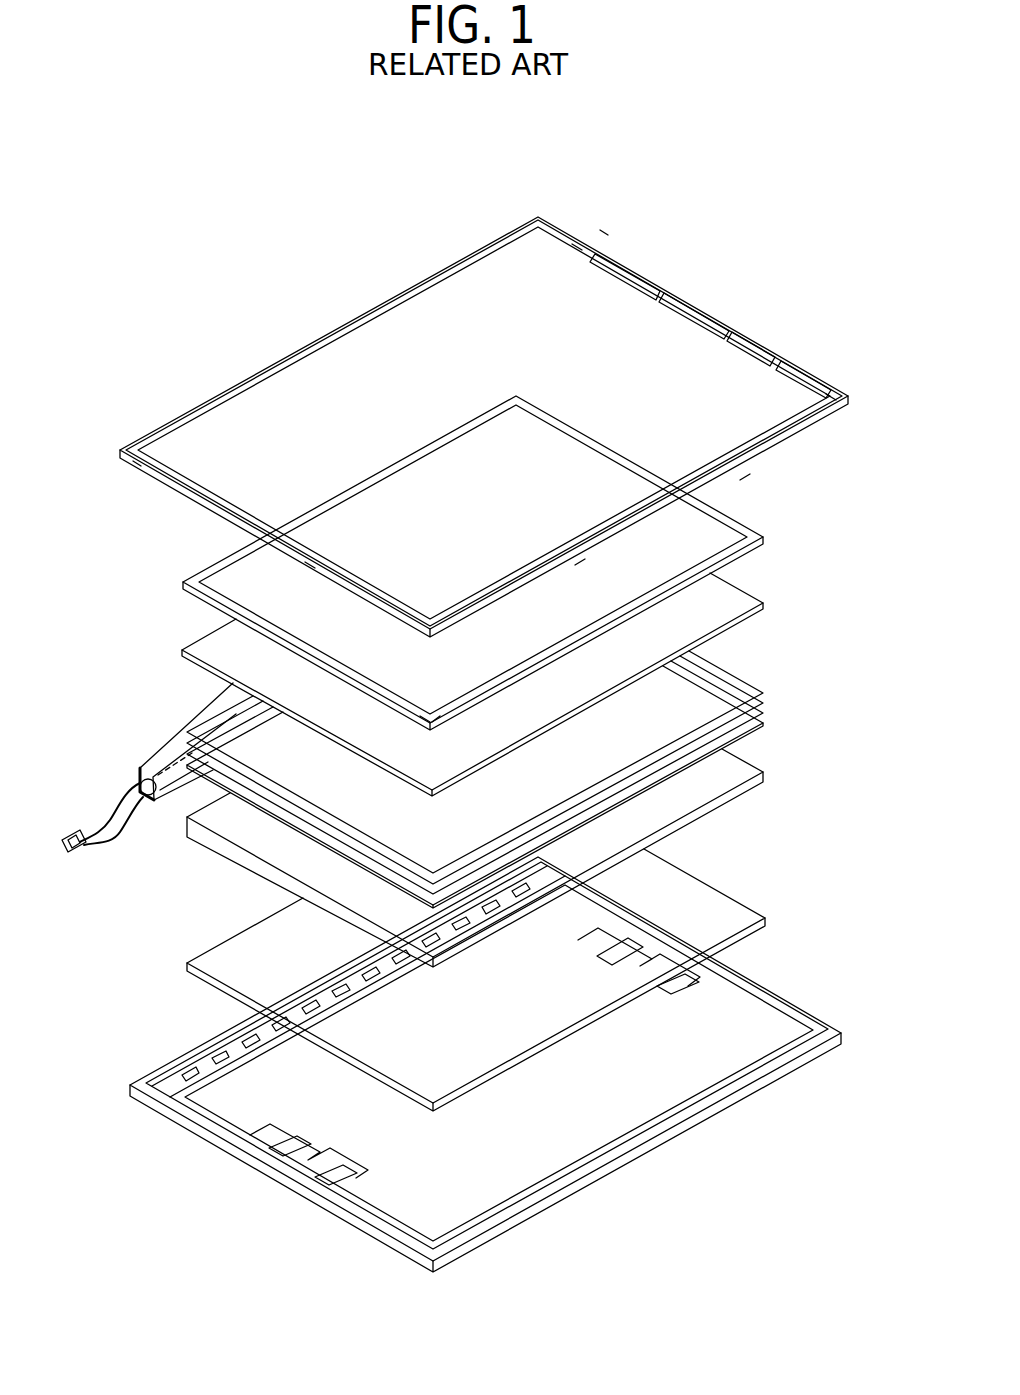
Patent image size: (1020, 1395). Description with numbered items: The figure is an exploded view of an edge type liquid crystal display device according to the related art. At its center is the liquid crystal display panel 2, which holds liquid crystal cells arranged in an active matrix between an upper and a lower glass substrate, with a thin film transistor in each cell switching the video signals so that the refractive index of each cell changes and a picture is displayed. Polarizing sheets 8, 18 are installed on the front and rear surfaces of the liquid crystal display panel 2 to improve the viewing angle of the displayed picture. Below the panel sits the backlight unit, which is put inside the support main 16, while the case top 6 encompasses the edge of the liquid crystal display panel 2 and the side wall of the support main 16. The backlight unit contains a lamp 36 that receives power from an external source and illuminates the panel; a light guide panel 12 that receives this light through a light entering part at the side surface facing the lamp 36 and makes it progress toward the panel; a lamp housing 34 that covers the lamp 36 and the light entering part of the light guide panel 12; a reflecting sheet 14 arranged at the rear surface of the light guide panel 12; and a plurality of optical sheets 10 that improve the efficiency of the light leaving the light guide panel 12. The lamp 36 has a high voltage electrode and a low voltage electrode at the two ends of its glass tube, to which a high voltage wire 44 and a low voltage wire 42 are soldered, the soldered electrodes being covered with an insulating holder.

The case top 6 is at (832, 383).
The polarizing sheet 18 is at (720, 522).
The liquid crystal display panel 2 is at (764, 540).
The polarizing sheet 8 is at (750, 603).
The optical sheets 10 is at (758, 694).
The light guide panel 12 is at (665, 805).
The reflecting sheet 14 is at (742, 920).
The support main 16 is at (778, 995).
The lamp housing 34 is at (162, 768).
The lamp 36 is at (150, 778).
The low voltage wire 42 is at (102, 812).
The high voltage wire 44 is at (120, 832).